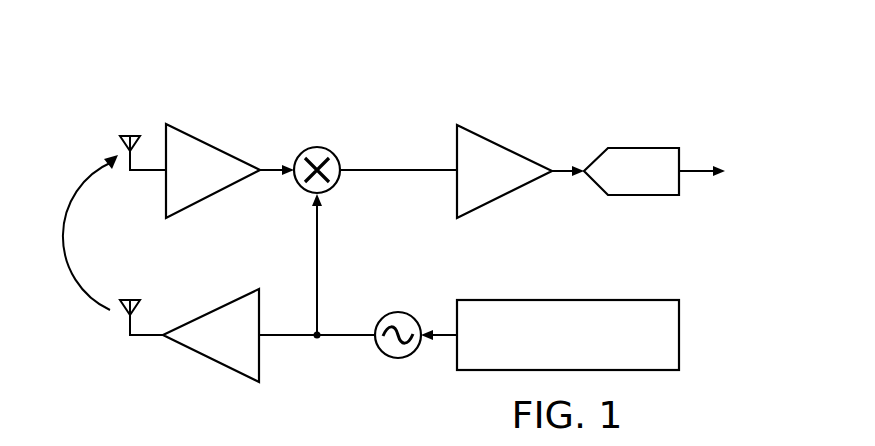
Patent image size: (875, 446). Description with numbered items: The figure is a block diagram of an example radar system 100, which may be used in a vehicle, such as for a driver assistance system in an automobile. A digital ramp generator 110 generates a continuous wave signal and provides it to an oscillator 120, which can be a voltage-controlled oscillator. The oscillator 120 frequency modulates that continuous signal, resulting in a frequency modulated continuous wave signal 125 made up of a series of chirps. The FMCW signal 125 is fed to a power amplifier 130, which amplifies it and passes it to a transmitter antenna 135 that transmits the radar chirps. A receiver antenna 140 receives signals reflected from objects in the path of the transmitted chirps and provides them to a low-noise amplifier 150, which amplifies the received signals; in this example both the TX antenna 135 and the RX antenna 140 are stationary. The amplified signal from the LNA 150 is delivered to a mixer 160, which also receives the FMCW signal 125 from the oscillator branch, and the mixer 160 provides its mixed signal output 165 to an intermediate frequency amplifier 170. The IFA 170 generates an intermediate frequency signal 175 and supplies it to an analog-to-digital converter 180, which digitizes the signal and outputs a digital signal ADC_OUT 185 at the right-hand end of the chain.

The radar system 100 is at (190, 60).
The digital ramp generator 110 is at (680, 350).
The oscillator 120 is at (400, 361).
The frequency modulated continuous wave (FMCW) signal 125 is at (315, 255).
The power amplifier (PA) 130 is at (215, 366).
The transmitter (TX) antenna 135 is at (120, 300).
The receiver (RX) antenna 140 is at (122, 136).
The low-noise amplifier (LNA) 150 is at (212, 148).
The mixer 160 is at (323, 150).
The mixed signal output 165 is at (398, 175).
The intermediate frequency amplifier (IFA) 170 is at (507, 148).
The intermediate frequency signal 175 is at (562, 176).
The analog-to-digital converter (ADC) 180 is at (643, 149).
The digital signal ADC_OUT 185 is at (690, 171).